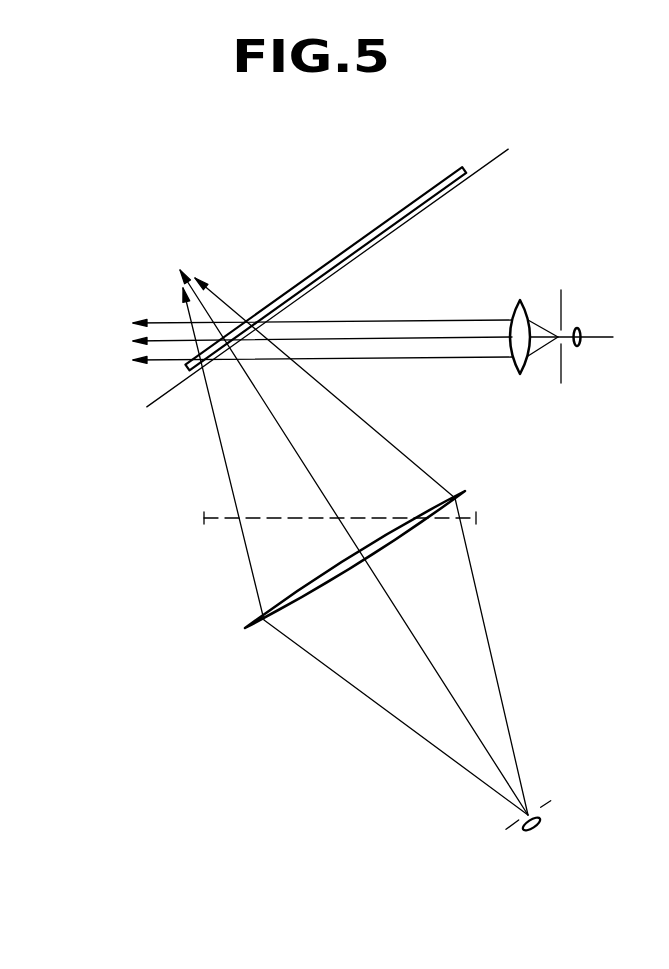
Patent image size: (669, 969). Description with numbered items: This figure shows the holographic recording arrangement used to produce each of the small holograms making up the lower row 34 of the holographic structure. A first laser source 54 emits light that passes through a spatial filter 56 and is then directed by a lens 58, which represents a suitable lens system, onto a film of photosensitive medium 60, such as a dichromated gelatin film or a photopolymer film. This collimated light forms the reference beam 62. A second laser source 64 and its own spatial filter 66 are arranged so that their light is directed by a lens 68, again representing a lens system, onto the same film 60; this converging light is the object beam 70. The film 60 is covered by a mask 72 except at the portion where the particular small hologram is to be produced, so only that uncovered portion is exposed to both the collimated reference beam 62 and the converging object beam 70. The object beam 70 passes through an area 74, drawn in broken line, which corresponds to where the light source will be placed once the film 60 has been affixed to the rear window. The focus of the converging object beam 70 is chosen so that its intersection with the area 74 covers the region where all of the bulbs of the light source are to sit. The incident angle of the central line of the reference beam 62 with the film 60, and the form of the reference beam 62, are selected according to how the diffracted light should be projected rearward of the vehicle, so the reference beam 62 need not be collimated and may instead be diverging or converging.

The lower row 34 is at (245, 346).
The first laser source 54 is at (602, 340).
The spatial filter 56 is at (587, 390).
The lens 58 is at (530, 302).
The film of photosensitive medium 60 is at (420, 200).
The reference beam 62 is at (128, 310).
The second laser source 64 is at (535, 840).
The spatial filter 66 is at (555, 810).
The lens 68 is at (335, 582).
The object beam 70 is at (392, 453).
The mask 72 is at (413, 220).
The area 74 is at (277, 512).